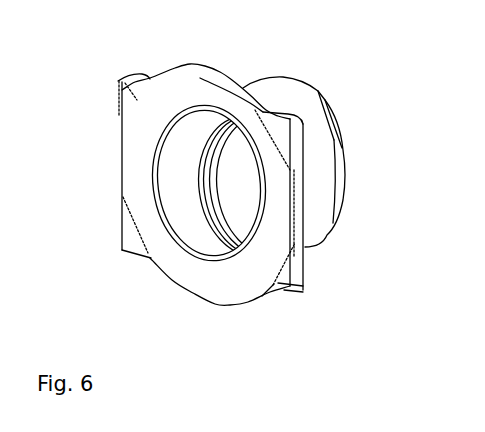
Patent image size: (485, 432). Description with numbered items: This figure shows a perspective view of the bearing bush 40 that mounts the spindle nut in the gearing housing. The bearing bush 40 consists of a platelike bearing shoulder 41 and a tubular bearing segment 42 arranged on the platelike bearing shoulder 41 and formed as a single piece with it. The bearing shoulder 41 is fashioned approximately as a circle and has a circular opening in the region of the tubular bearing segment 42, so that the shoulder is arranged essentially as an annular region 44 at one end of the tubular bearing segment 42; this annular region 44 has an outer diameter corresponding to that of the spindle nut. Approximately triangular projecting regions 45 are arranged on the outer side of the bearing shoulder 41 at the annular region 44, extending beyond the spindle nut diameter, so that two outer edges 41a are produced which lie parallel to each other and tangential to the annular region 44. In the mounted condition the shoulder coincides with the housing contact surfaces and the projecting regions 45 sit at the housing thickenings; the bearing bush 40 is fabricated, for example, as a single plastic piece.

The bearing bush 40 is at (349, 110).
The platelike bearing shoulder 41 is at (215, 294).
The outer edges 41a is at (125, 170).
The tubular bearing segment 42 is at (291, 100).
The annular region 44 is at (267, 292).
The projecting regions 45 is at (130, 91).